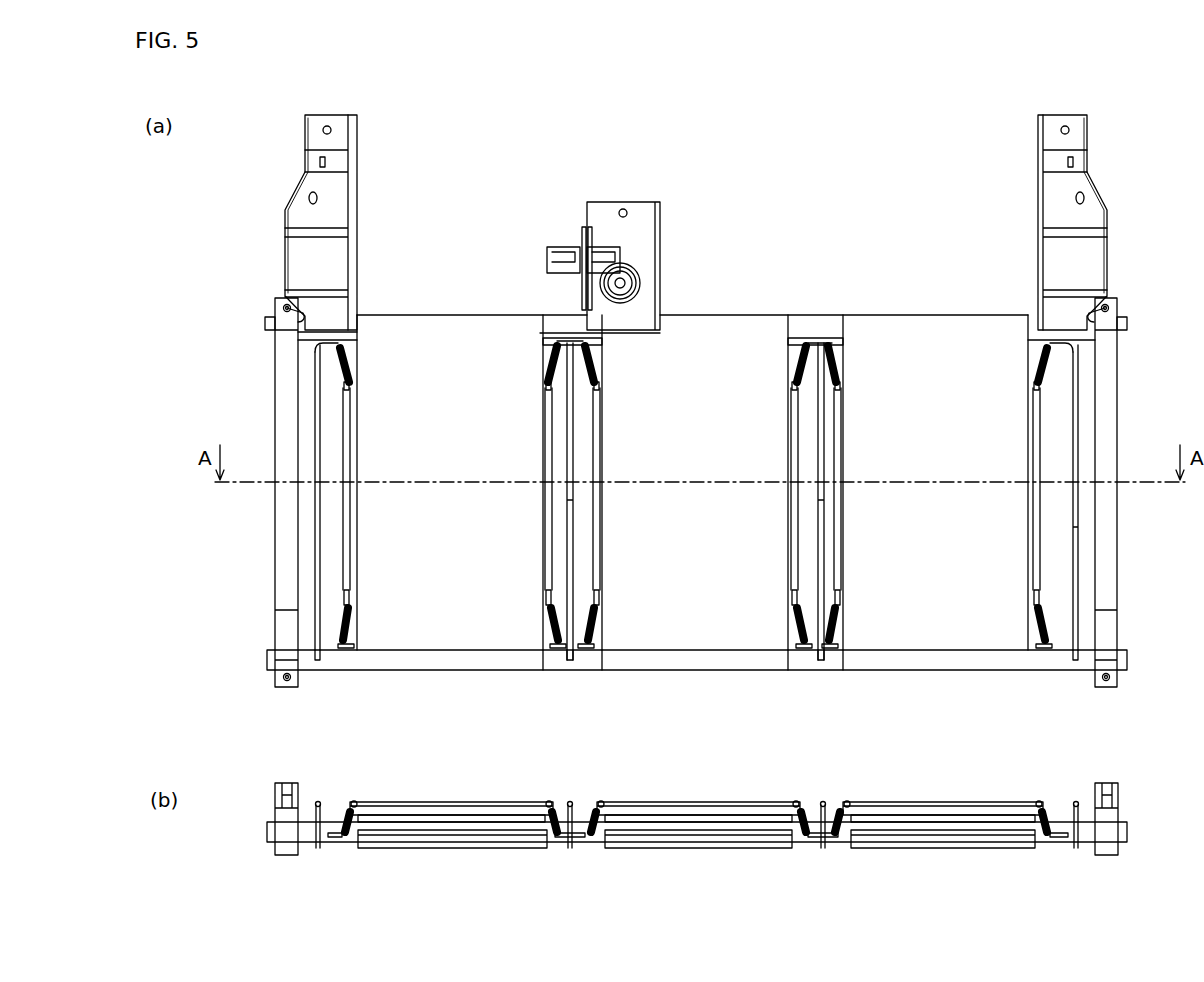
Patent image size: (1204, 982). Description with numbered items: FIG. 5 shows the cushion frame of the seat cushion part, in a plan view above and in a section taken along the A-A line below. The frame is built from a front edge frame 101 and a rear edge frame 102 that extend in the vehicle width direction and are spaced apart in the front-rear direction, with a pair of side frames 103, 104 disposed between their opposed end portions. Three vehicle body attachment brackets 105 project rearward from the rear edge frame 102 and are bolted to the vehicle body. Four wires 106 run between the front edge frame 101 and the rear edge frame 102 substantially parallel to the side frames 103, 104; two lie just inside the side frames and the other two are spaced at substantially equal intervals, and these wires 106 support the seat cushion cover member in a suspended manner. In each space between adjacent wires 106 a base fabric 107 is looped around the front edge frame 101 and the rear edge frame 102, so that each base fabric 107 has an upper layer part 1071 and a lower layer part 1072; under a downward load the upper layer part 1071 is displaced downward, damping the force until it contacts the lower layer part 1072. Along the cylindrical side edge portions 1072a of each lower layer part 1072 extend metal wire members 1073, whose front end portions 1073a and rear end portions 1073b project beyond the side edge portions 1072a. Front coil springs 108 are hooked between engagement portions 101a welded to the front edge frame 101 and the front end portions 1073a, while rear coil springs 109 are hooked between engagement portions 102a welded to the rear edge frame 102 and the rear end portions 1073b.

The front edge frame 101 is at (1128, 660).
The engagement portions 101a is at (322, 652).
The rear edge frame 102 is at (1120, 312).
The engagement portions 102a is at (330, 345).
The side frame 103 is at (1115, 578).
The side frame 104 is at (283, 540).
The vehicle body attachment brackets 105 is at (352, 175).
The wires 106 is at (316, 655).
The base fabrics 107 is at (441, 338).
The upper layer part 1071 is at (440, 650).
The lower layer part 1072 is at (450, 848).
The side edge portions 1072a is at (355, 407).
The wire members 1073 is at (352, 512).
The front end portions 1073a is at (350, 603).
The rear end portions 1073b is at (343, 385).
The front coil springs 108 is at (351, 628).
The rear coil springs 109 is at (342, 370).